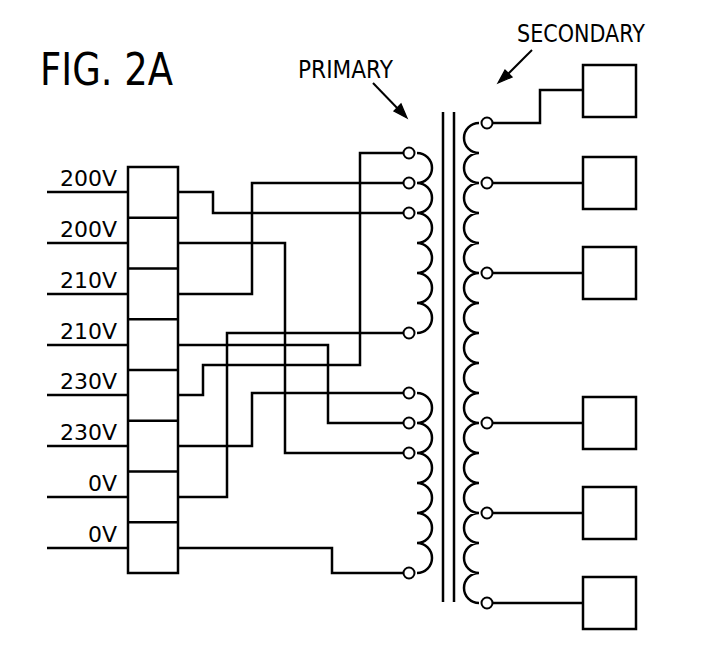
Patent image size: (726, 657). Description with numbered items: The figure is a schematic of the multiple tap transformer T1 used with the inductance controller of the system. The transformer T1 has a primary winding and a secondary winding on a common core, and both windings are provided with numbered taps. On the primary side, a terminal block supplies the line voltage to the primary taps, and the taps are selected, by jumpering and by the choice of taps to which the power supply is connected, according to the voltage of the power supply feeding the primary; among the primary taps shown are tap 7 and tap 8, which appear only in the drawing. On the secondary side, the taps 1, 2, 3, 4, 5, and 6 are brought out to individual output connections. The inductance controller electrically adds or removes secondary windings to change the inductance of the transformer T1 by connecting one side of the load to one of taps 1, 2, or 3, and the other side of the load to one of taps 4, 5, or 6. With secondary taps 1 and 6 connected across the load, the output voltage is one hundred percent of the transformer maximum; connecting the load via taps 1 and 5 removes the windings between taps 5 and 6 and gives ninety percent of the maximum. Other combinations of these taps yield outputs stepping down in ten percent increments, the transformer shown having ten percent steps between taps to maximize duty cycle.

The transformer T1 is at (448, 340).
The tap 1 is at (390, 142).
The tap 2 is at (390, 308).
The tap 3 is at (390, 233).
The tap 4 is at (390, 390).
The tap 5 is at (390, 333).
The tap 6 is at (390, 498).
The terminal 7 is at (279, 410).
The terminal 8 is at (279, 557).